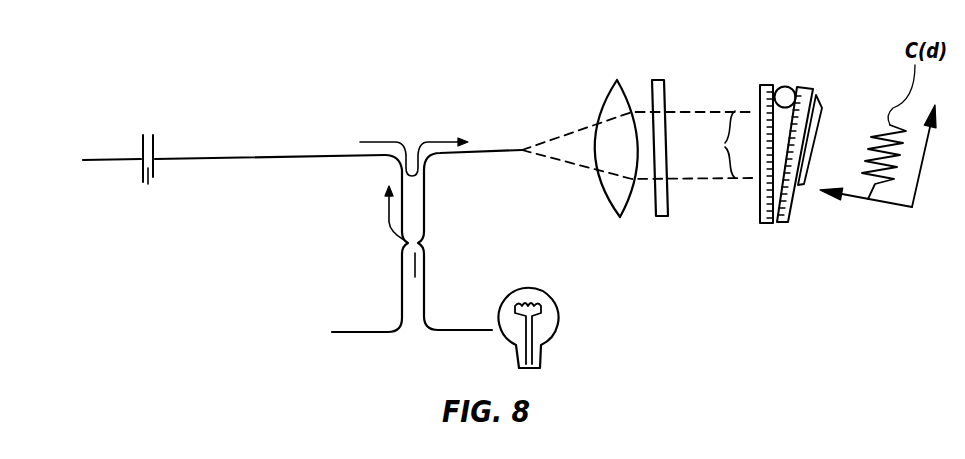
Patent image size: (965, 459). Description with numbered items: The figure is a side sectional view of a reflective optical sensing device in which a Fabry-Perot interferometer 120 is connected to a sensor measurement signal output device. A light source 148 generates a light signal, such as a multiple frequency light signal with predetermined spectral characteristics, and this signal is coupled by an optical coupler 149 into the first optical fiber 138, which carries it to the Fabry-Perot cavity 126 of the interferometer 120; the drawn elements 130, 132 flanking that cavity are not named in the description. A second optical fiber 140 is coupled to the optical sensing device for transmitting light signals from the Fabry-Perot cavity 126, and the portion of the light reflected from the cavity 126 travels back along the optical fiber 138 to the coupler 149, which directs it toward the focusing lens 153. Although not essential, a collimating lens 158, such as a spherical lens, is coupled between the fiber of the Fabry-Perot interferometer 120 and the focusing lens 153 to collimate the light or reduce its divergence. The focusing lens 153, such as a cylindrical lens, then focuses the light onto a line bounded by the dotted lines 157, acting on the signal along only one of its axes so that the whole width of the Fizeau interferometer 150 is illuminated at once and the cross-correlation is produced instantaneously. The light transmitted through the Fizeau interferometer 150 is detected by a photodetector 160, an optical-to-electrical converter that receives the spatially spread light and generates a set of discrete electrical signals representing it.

The Fabry-Perot interferometer 120 is at (142, 154).
The Fabry-Perot cavity 126 is at (146, 186).
The right cladding wall 130 is at (155, 174).
The left cladding wall 132 is at (140, 174).
The first optical fiber 138 is at (213, 158).
The second optical fiber 140 is at (95, 160).
The light source 148 is at (533, 297).
The optical coupler 149 is at (436, 243).
The Fizeau interferometer 150 is at (787, 78).
The optical focusing lens 153 is at (660, 98).
The dotted lines 157 is at (713, 144).
The collimating lens 158 is at (617, 105).
The photodetector 160 is at (800, 192).